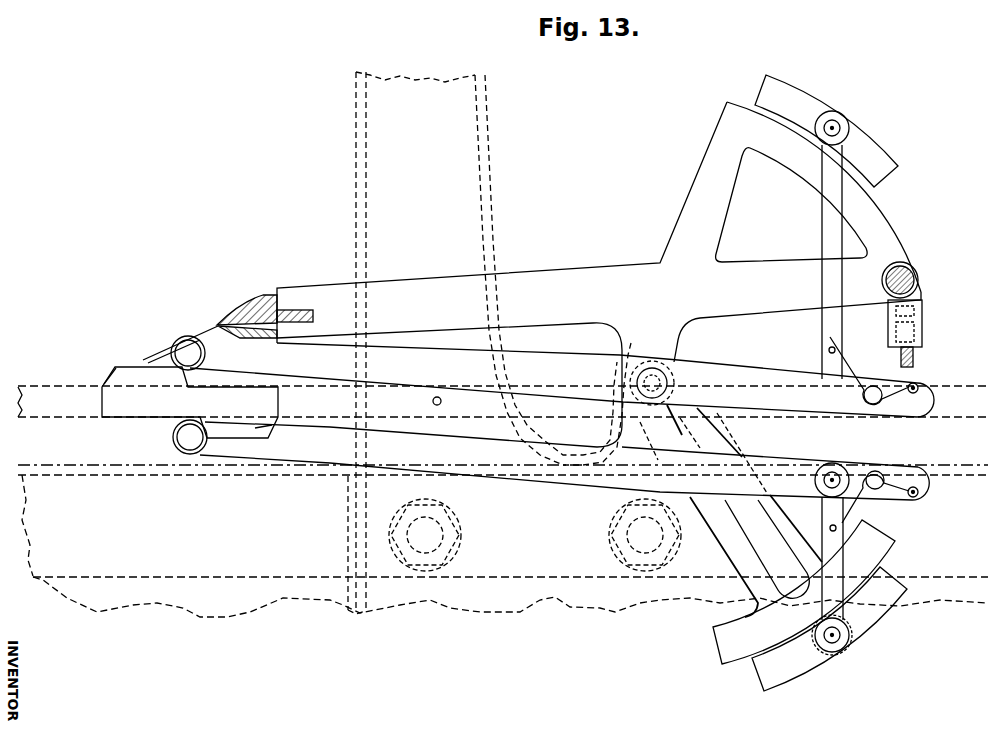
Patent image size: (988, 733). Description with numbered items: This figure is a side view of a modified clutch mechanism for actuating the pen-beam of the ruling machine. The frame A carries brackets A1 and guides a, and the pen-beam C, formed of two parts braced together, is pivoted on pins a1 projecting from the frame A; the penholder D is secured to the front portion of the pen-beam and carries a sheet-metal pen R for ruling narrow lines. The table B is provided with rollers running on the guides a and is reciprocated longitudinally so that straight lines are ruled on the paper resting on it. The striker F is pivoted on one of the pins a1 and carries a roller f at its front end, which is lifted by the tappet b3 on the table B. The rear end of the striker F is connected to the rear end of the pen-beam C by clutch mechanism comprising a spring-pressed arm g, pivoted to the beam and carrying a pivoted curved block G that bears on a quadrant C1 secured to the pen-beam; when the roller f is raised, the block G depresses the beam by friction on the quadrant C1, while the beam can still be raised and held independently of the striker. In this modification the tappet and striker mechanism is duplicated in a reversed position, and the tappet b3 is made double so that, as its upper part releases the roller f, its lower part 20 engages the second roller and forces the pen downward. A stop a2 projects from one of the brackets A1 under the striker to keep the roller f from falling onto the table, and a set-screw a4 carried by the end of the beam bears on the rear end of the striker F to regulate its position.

The frame A is at (503, 501).
The guides a is at (160, 580).
The brackets A1 is at (360, 197).
The table B is at (47, 394).
The tappet b3 is at (104, 371).
The lower part of tappet 20 is at (251, 429).
The pen-beam C is at (563, 274).
The quadrant C1 is at (872, 208).
The penholder D is at (265, 313).
The pen R is at (180, 344).
The striker F is at (562, 380).
The roller f is at (200, 354).
The curved block G is at (873, 150).
The spring-pressed arm g is at (830, 240).
The pins a1 is at (678, 360).
The stop a2 is at (419, 405).
The set-screw a4 is at (915, 357).